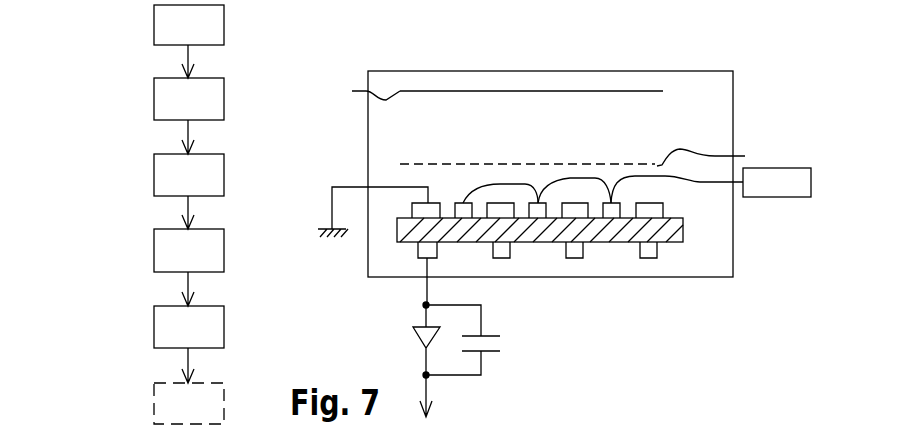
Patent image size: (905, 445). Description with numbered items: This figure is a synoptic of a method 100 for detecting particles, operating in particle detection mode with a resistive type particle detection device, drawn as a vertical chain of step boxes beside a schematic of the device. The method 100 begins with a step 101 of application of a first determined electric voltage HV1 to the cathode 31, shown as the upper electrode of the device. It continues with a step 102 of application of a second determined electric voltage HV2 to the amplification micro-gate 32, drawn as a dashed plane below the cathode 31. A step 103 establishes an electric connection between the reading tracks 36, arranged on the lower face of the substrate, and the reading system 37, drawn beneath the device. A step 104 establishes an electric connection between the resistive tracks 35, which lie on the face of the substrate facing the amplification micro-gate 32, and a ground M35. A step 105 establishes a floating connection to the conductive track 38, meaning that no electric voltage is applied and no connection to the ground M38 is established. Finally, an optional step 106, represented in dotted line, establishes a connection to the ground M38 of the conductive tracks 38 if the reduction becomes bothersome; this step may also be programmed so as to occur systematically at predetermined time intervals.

The method for detecting particles 100 is at (132, 70).
The step of application of a first determined electric voltage 101 is at (207, 37).
The step of application of a second determined electric voltage 102 is at (207, 111).
The step of establishing an electric connection between the reading tracks and the r 103 is at (207, 187).
The step of establishing an electric connection between the resistive tracks and a g 104 is at (207, 262).
The step of establishing a floating connection to the conductive track 105 is at (207, 339).
The step of establishing a connection to the ground of the conductive tracks 106 is at (207, 415).
The cathode 31 is at (622, 93).
The amplification micro-gate 32 is at (550, 164).
The resistive tracks 35 is at (655, 212).
The reading tracks 36 is at (647, 258).
The reading system 37 is at (497, 374).
The conductive track 38 is at (608, 212).
The first determined electric voltage HV1 is at (355, 92).
The second determined electric voltage HV2 is at (722, 154).
The ground M35 is at (330, 233).
The ground M38 is at (637, 185).